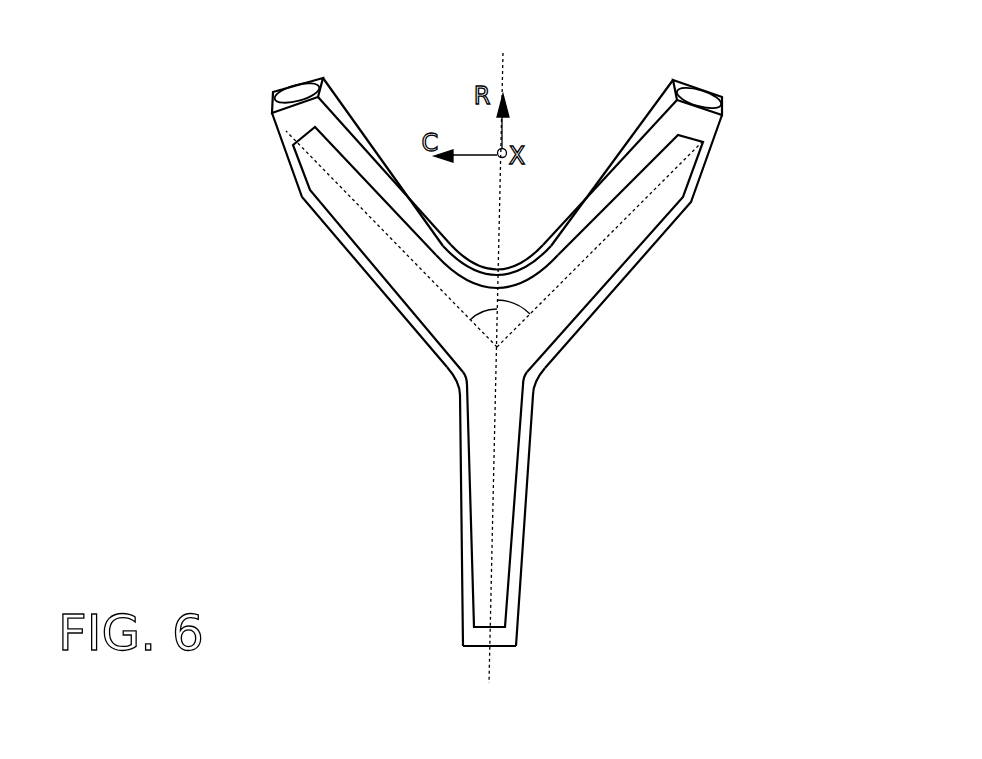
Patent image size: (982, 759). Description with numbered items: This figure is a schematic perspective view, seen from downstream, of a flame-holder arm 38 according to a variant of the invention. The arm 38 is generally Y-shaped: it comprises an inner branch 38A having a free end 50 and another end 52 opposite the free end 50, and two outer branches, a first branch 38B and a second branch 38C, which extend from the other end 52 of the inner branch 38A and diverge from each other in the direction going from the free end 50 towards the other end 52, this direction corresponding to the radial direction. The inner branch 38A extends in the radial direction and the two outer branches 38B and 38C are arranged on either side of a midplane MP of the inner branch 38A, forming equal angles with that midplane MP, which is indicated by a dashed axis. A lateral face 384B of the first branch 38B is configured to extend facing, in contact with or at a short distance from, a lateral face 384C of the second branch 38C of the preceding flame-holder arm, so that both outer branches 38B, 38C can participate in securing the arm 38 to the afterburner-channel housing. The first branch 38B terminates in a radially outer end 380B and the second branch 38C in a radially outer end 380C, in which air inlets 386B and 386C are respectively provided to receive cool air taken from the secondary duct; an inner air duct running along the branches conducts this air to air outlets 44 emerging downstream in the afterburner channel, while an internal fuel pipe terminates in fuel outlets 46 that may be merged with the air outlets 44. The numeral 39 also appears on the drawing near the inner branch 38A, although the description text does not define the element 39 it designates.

The flame-holder arm 38 is at (48, 262).
The inner branch 38A is at (463, 472).
The first branch 38B is at (343, 242).
The second branch 38C is at (547, 242).
The internal cavity of stem 39 is at (502, 520).
The air outlets 44 is at (522, 442).
The fuel outlets 46 is at (496, 506).
The free end 50 is at (480, 647).
The other end 52 is at (507, 362).
The radially outer end 380B is at (273, 100).
The lateral face 384B is at (282, 155).
The air inlet 386B is at (297, 95).
The radially outer end 380C is at (723, 103).
The lateral face 384C is at (708, 160).
The air inlet 386C is at (698, 98).
The midplane MP is at (502, 63).